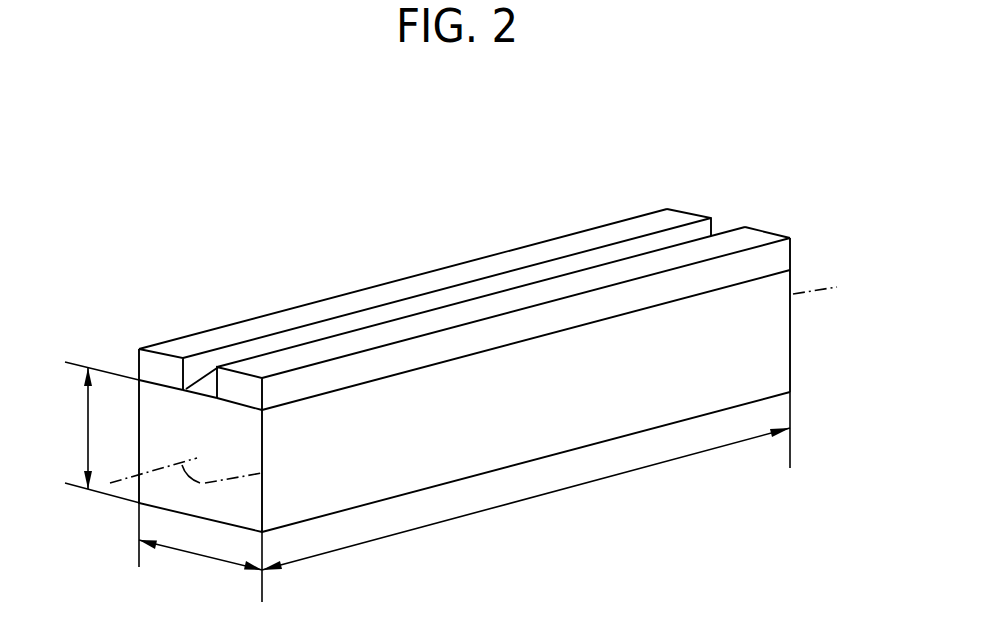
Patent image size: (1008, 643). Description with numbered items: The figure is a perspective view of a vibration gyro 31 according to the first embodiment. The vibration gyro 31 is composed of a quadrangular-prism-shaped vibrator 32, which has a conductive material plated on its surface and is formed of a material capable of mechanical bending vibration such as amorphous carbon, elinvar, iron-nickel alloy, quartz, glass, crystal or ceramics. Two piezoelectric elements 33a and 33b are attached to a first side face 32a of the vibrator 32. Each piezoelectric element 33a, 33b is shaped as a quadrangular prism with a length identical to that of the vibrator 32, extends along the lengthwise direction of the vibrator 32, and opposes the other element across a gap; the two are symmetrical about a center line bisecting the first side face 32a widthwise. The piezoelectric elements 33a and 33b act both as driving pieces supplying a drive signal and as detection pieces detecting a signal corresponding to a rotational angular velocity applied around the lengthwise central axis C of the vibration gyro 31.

The vibration gyro 31 is at (411, 240).
The vibrator 32 is at (772, 376).
The first side face 32a is at (210, 392).
The piezoelectric element 33a is at (615, 222).
The piezoelectric element 33b is at (752, 235).
The lengthwise central axis C is at (262, 473).